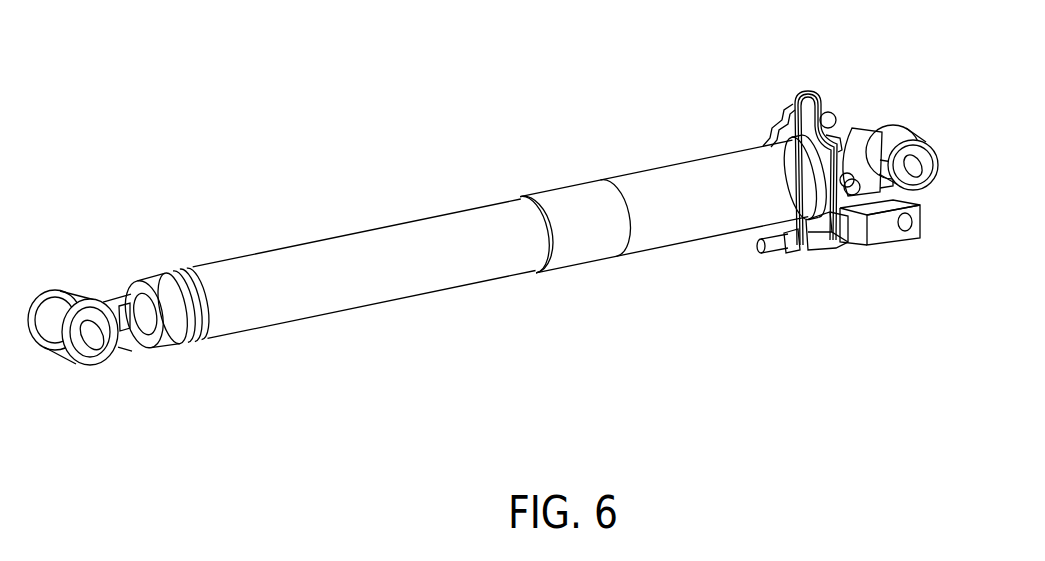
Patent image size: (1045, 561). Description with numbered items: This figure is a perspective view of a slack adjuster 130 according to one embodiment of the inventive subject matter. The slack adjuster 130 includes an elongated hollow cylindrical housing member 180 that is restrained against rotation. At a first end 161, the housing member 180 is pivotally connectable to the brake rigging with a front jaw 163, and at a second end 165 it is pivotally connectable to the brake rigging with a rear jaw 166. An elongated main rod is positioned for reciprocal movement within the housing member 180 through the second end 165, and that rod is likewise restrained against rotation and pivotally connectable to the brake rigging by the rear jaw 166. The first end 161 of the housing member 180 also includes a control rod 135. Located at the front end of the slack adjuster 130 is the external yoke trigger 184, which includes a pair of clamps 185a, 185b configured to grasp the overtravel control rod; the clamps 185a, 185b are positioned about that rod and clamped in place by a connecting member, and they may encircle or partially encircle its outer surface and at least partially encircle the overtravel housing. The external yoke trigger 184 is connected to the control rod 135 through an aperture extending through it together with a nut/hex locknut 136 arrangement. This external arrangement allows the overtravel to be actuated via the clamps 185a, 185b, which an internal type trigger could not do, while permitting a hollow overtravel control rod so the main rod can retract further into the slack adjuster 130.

The slack adjuster 130 is at (205, 102).
The control rod 135 is at (880, 235).
The nut/hex locknut 136 is at (782, 257).
The first end 161 is at (730, 152).
The front jaw 163 is at (921, 134).
The second end 165 is at (193, 276).
The rear jaw 166 is at (61, 303).
The housing member 180 is at (482, 228).
The external yoke trigger 184 is at (821, 101).
The clamp 185a is at (840, 136).
The clamp 185b is at (777, 128).